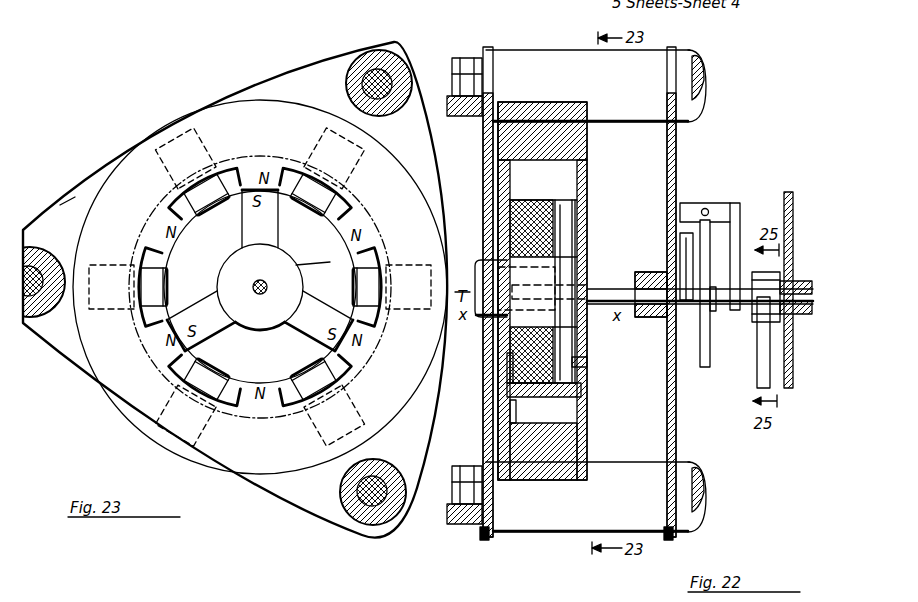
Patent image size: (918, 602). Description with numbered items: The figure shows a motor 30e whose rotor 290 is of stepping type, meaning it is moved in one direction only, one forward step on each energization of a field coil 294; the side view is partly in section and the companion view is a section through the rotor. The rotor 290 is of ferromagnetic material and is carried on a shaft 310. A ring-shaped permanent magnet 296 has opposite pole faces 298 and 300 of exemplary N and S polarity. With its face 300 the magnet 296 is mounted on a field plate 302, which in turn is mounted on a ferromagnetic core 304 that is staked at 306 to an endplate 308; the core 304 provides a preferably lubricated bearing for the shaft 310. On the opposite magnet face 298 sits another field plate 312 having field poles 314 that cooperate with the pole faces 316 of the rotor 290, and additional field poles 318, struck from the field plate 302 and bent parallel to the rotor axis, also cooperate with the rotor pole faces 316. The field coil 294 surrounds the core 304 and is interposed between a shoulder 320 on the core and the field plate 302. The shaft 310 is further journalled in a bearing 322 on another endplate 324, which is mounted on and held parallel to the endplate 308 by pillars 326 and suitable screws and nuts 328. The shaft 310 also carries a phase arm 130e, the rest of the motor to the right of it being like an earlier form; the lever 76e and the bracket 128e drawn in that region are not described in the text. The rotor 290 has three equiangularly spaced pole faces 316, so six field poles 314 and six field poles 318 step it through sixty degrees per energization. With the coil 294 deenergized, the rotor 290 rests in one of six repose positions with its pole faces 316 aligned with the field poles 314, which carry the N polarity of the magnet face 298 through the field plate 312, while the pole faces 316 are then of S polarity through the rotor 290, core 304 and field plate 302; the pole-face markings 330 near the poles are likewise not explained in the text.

In FIG. 23, the motor 30e is at (289, 62).
In FIG. 22, the motor 30e is at (718, 129).
In FIG. 23, the field plate 312 is at (380, 172).
In FIG. 22, the field plate 312 is at (583, 169).
In FIG. 23, the pillars 326 is at (380, 51).
In FIG. 22, the pillars 326 is at (623, 94).
In FIG. 23, the screws and nuts 328 is at (372, 77).
In FIG. 22, the screws and nuts 328 is at (474, 66).
In FIG. 23, the endplate 308 is at (67, 199).
In FIG. 22, the endplate 308 is at (486, 136).
In FIG. 23, the permanent magnet 296 is at (138, 324).
In FIG. 22, the permanent magnet 296 is at (539, 116).
In FIG. 23, the field poles 314 is at (338, 201).
In FIG. 22, the field poles 314 is at (583, 194).
In FIG. 23, the field poles 318 is at (196, 228).
In FIG. 22, the field poles 318 is at (583, 391).
In FIG. 23, the pole face 330 is at (178, 299).
In FIG. 23, the pole faces 316 is at (318, 208).
In FIG. 22, the pole faces 316 is at (588, 204).
In FIG. 23, the shaft 310 is at (260, 296).
In FIG. 22, the shaft 310 is at (623, 289).
In FIG. 23, the ferromagnetic core 304 is at (267, 283).
In FIG. 22, the ferromagnetic core 304 is at (545, 304).
In FIG. 23, the rotor 290 is at (303, 275).
In FIG. 22, the rotor 290 is at (592, 233).
In FIG. 22, the field plate 302 is at (486, 168).
In FIG. 22, the endplate 324 is at (677, 425).
In FIG. 22, the pole face 298 is at (586, 450).
In FIG. 22, the pole face 300 is at (509, 447).
In FIG. 22, the field coil 294 is at (522, 350).
In FIG. 22, the staking 306 is at (478, 262).
In FIG. 22, the shoulder 320 is at (556, 268).
In FIG. 22, the bearing 322 is at (651, 273).
In FIG. 22, the bracket 128e is at (733, 208).
In FIG. 22, the phase arm 130e is at (688, 243).
In FIG. 22, the lever 76e is at (753, 325).